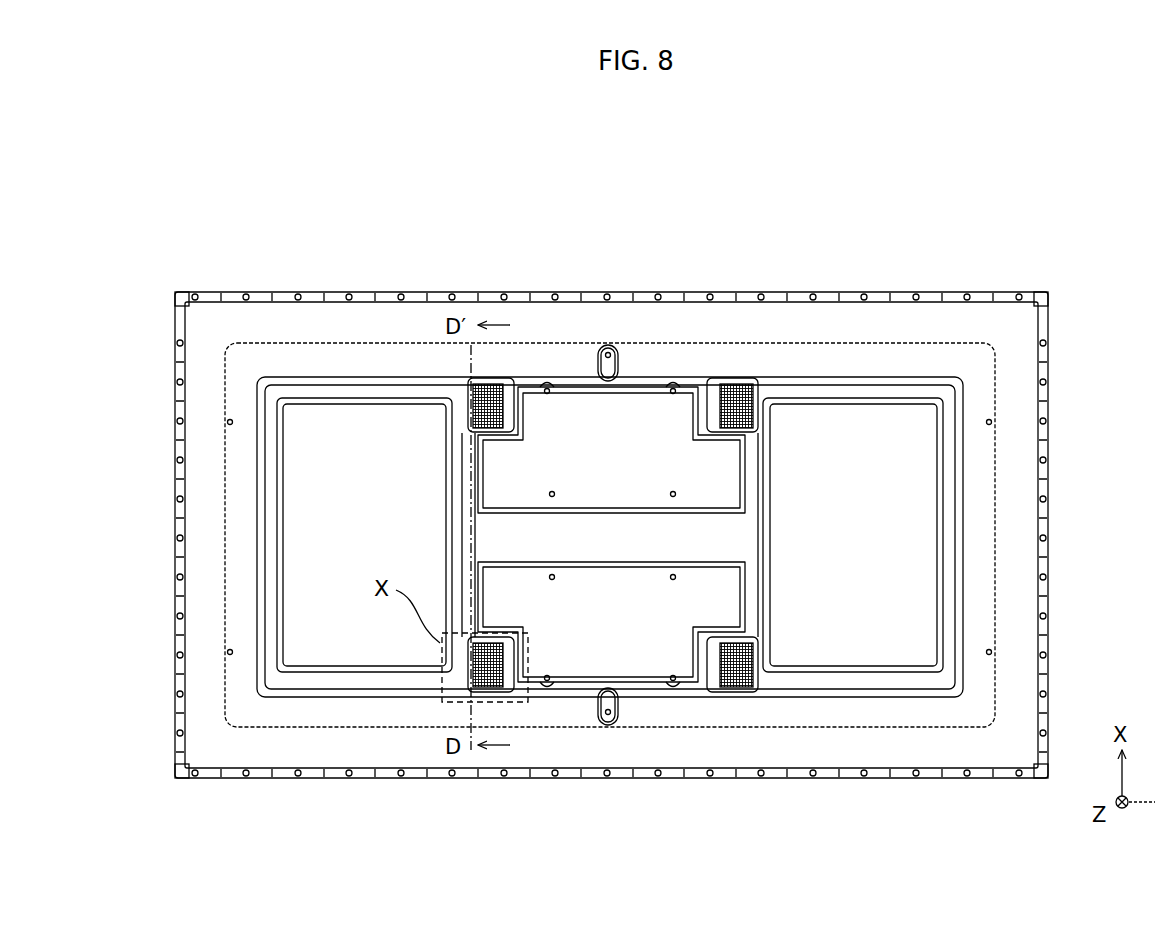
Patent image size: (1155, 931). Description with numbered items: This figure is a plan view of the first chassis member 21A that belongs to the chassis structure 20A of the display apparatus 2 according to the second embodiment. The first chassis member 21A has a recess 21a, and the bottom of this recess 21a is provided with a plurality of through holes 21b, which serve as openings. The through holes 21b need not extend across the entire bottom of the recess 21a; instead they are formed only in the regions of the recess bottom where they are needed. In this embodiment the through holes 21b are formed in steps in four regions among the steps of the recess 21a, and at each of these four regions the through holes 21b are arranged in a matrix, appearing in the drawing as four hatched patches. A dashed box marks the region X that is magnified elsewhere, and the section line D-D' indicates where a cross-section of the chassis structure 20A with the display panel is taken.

The display apparatus 2 is at (1112, 227).
The chassis structure 20A is at (928, 266).
The first chassis member 21A is at (1048, 298).
The recess 21a is at (463, 500).
The through holes 21b is at (492, 385).